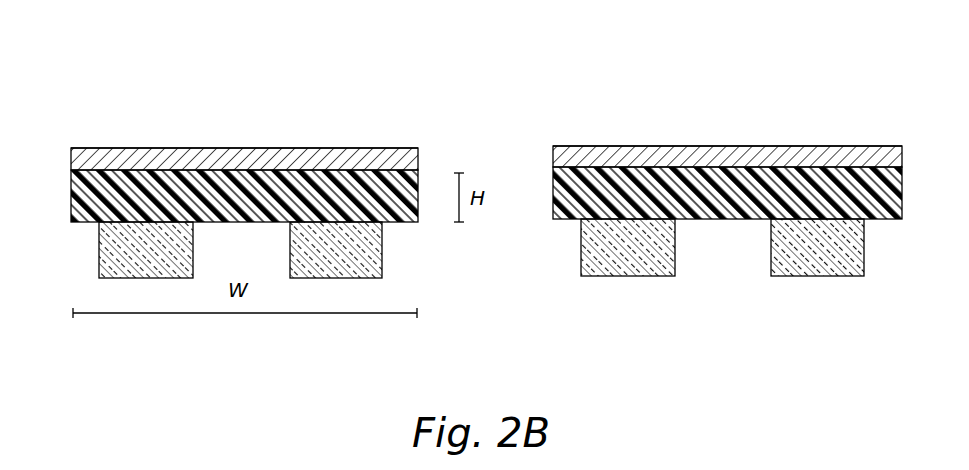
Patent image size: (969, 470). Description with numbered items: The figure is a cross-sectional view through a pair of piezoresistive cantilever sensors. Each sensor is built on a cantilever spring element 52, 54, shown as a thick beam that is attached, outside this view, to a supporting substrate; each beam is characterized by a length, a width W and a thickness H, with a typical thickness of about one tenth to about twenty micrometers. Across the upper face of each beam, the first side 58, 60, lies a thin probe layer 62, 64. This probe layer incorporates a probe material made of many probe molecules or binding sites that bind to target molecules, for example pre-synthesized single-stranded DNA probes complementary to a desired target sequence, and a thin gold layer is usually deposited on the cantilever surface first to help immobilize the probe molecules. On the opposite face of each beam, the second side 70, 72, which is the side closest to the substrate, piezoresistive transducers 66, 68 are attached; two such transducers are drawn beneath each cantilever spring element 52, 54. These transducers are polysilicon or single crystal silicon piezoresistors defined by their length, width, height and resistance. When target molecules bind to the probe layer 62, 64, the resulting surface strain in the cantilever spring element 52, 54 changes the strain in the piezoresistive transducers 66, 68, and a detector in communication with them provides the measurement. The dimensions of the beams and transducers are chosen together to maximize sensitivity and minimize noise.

The cantilever spring element 52 is at (705, 228).
The cantilever spring element 54 is at (274, 210).
The first side 58 is at (762, 156).
The first side 60 is at (285, 157).
The probe layer 62 is at (576, 156).
The probe layer 64 is at (104, 156).
The piezoresistive transducer 66 is at (647, 273).
The piezoresistive transducer 68 is at (165, 276).
The second side 70 is at (558, 230).
The second side 72 is at (403, 222).